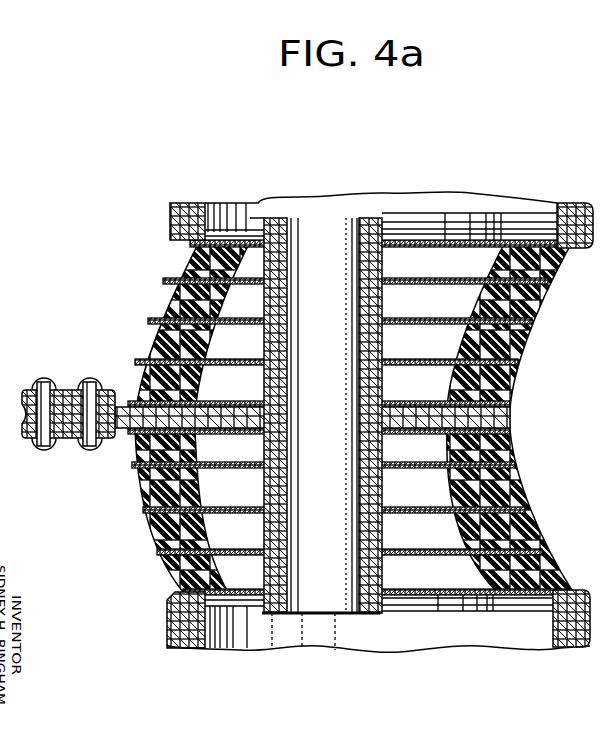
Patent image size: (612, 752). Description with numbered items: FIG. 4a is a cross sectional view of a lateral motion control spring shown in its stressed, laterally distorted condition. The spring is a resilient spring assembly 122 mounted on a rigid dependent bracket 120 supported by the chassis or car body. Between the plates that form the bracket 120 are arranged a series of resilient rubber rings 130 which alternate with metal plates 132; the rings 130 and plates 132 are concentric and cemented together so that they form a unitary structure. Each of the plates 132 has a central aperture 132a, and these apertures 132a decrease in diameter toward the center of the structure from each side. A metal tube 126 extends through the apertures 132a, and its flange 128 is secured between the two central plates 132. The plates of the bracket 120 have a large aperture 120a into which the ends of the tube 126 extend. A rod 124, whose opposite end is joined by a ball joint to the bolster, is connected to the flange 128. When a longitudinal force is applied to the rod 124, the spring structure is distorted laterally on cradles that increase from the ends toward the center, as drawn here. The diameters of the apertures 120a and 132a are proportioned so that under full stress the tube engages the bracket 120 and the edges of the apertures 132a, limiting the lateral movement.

The rigid dependent bracket 120 is at (573, 210).
The large aperture 120a is at (473, 237).
The resilient spring assembly 122 is at (533, 361).
The rod 124 is at (62, 440).
The metal tube 126 is at (371, 228).
The flange 128 is at (498, 418).
The rubber rings 130 is at (527, 571).
The metal plates 132 is at (530, 511).
The central apertures 132a is at (397, 322).